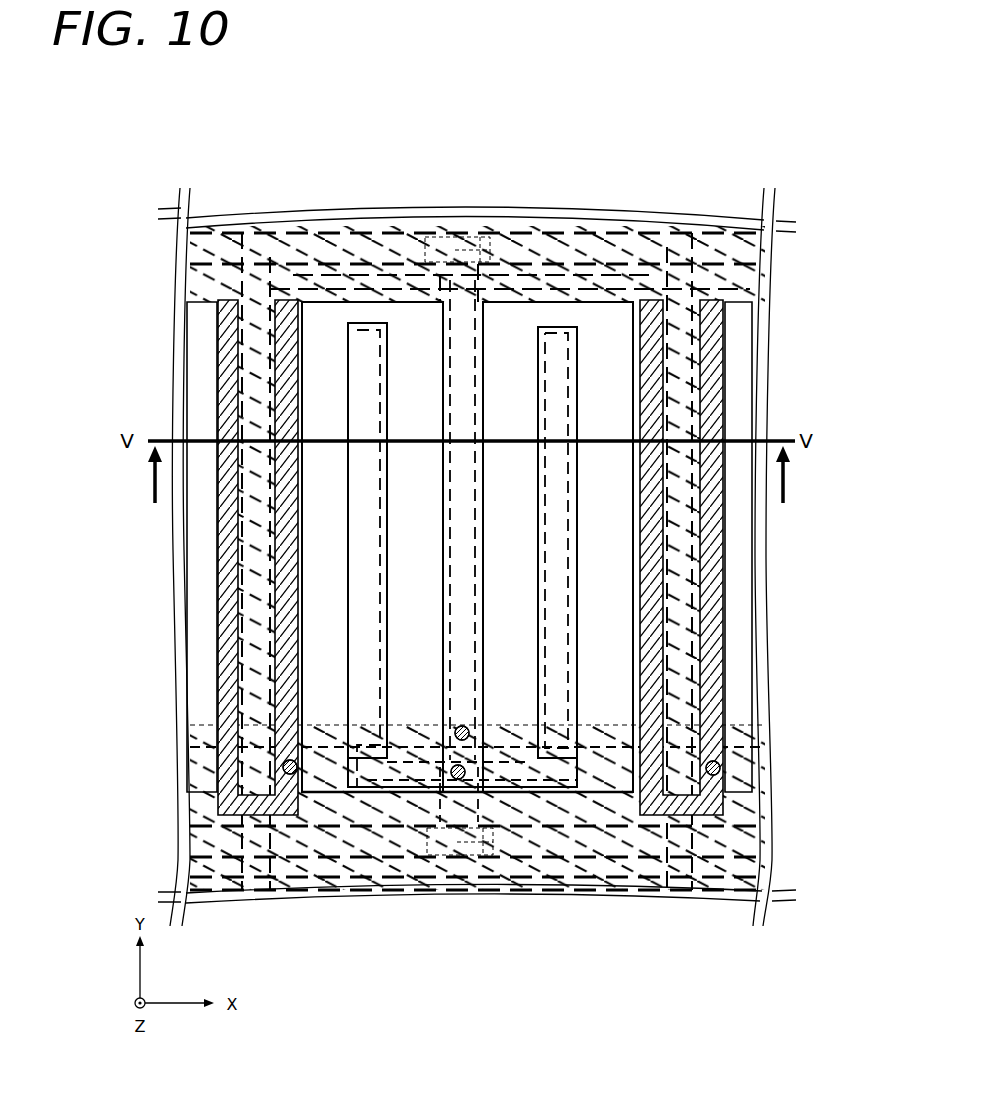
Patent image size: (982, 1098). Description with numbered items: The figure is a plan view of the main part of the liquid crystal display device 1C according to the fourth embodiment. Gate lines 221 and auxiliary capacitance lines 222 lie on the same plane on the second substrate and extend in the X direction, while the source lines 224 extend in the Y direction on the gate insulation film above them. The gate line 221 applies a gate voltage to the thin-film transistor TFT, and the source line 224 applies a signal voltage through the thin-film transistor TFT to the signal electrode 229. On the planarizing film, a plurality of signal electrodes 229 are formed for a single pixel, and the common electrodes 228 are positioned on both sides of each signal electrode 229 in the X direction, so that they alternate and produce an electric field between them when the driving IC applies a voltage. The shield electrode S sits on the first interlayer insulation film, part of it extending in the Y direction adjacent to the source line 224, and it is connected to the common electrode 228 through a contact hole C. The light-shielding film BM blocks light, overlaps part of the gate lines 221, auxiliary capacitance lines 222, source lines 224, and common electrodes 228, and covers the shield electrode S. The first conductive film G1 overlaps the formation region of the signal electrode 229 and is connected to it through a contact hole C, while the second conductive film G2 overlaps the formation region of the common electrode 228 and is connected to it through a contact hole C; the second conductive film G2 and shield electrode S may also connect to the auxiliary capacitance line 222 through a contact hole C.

The liquid crystal display device 1C is at (383, 159).
The gate line 221 is at (318, 250).
The auxiliary capacitance line 222 is at (337, 765).
The source line 224 is at (258, 232).
The common electrode 228 is at (519, 302).
The signal electrode 229 is at (388, 514).
The first conductive film G1 is at (355, 555).
The second conductive film G2 is at (455, 395).
The light-shielding film BM is at (580, 283).
The thin-film transistor TFT is at (438, 240).
The shield electrode S is at (225, 606).
The contact hole C is at (284, 765).